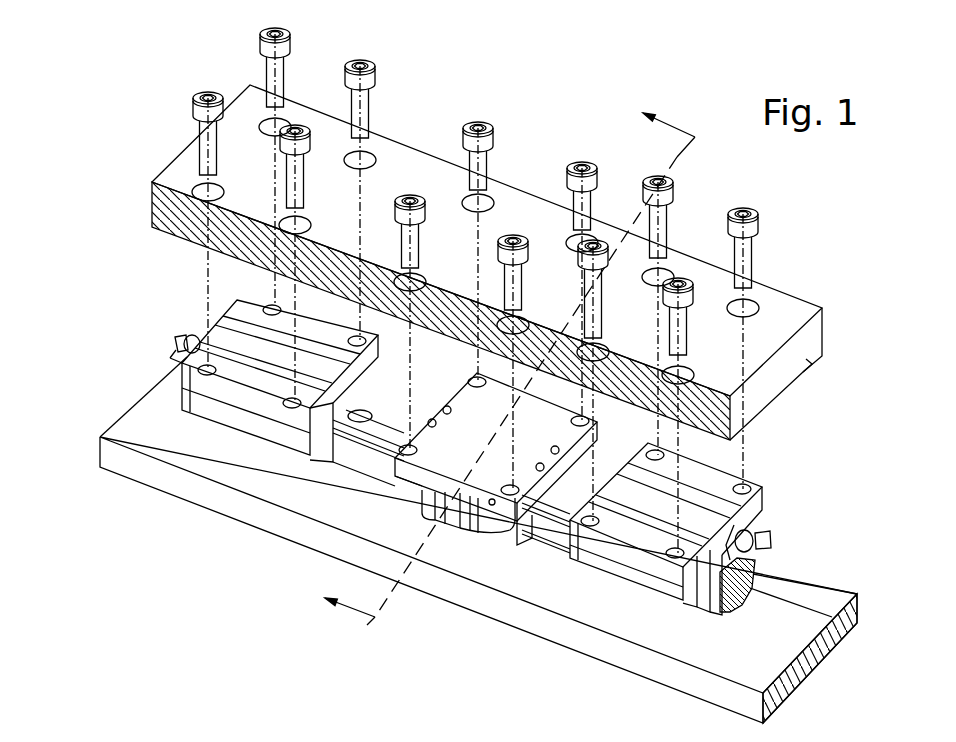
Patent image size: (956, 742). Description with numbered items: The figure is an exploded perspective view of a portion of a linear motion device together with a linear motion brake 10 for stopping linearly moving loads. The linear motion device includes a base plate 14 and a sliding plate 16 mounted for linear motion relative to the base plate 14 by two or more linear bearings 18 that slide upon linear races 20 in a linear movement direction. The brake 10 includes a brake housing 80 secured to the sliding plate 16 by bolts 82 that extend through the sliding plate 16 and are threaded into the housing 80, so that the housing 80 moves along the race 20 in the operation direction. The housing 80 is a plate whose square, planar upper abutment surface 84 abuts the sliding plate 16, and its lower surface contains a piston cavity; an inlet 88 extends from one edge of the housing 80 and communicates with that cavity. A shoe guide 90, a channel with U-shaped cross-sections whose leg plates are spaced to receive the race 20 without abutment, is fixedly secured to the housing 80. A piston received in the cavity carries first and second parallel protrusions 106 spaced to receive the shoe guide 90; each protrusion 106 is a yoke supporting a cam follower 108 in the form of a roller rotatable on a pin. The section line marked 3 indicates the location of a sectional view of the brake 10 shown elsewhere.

The brake 10 is at (397, 482).
The base plate 14 is at (822, 655).
The sliding plate 16 is at (808, 342).
The linear bearings 18 is at (207, 393).
The linear races 20 is at (740, 598).
The section line for FIG. 3 is at (500, 359).
The brake housing 80 is at (522, 508).
The bolts 82 is at (480, 118).
The upper abutment surface 84 is at (468, 400).
The inlet 88 is at (492, 505).
The shoe guide 90 is at (543, 523).
The protrusions 106 is at (485, 522).
The cam follower 108 is at (460, 517).